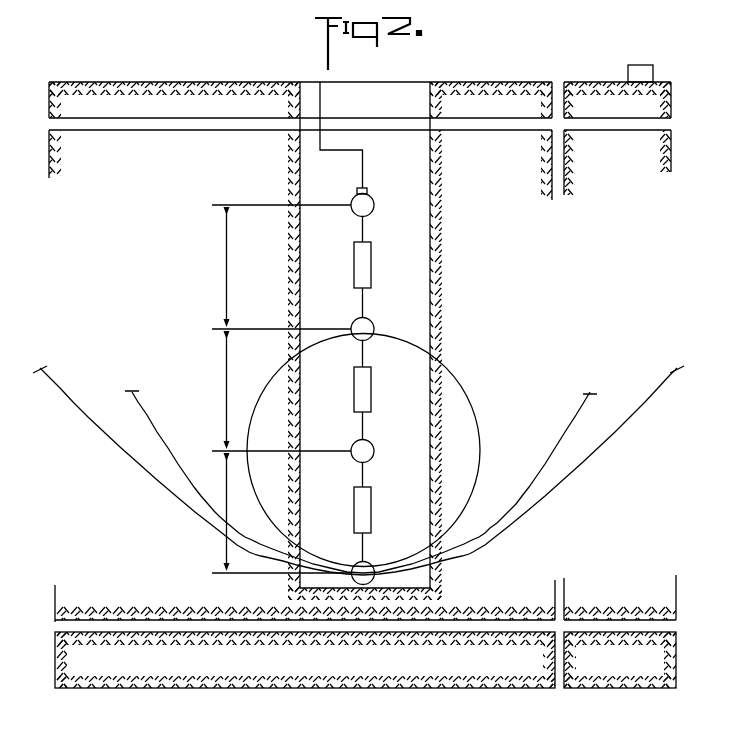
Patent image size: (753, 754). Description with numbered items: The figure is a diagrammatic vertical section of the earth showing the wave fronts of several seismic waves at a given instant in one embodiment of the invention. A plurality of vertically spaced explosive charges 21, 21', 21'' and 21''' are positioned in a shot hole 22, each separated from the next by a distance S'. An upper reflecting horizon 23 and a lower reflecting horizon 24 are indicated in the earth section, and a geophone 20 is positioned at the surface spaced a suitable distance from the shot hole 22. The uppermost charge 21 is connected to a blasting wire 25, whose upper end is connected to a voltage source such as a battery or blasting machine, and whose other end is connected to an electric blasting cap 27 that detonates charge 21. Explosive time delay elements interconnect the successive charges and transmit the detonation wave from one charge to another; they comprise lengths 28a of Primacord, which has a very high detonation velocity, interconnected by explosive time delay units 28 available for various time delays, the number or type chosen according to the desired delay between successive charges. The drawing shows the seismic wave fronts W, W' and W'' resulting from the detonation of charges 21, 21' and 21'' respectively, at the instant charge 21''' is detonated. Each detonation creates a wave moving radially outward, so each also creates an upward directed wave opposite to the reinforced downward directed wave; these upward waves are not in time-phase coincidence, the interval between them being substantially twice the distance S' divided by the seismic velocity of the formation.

The geophone 20 is at (642, 65).
The explosive charge 21 is at (378, 198).
The explosive charge 21' is at (379, 324).
The explosive charge 21'' is at (382, 452).
The explosive charge 21''' is at (383, 559).
The shot hole 22 is at (427, 163).
The upper reflecting horizon 23 is at (570, 80).
The lower reflecting horizon 24 is at (360, 680).
The blasting wire 25 is at (322, 137).
The electric blasting cap 27 is at (365, 187).
The explosive time delay unit 28 is at (371, 267).
The length of Primacord 28a is at (364, 230).
The distance separating spaced charges S' is at (282, 389).
The seismic wave front W is at (358, 470).
The seismic wave front W' is at (361, 482).
The seismic wave front W'' is at (382, 450).